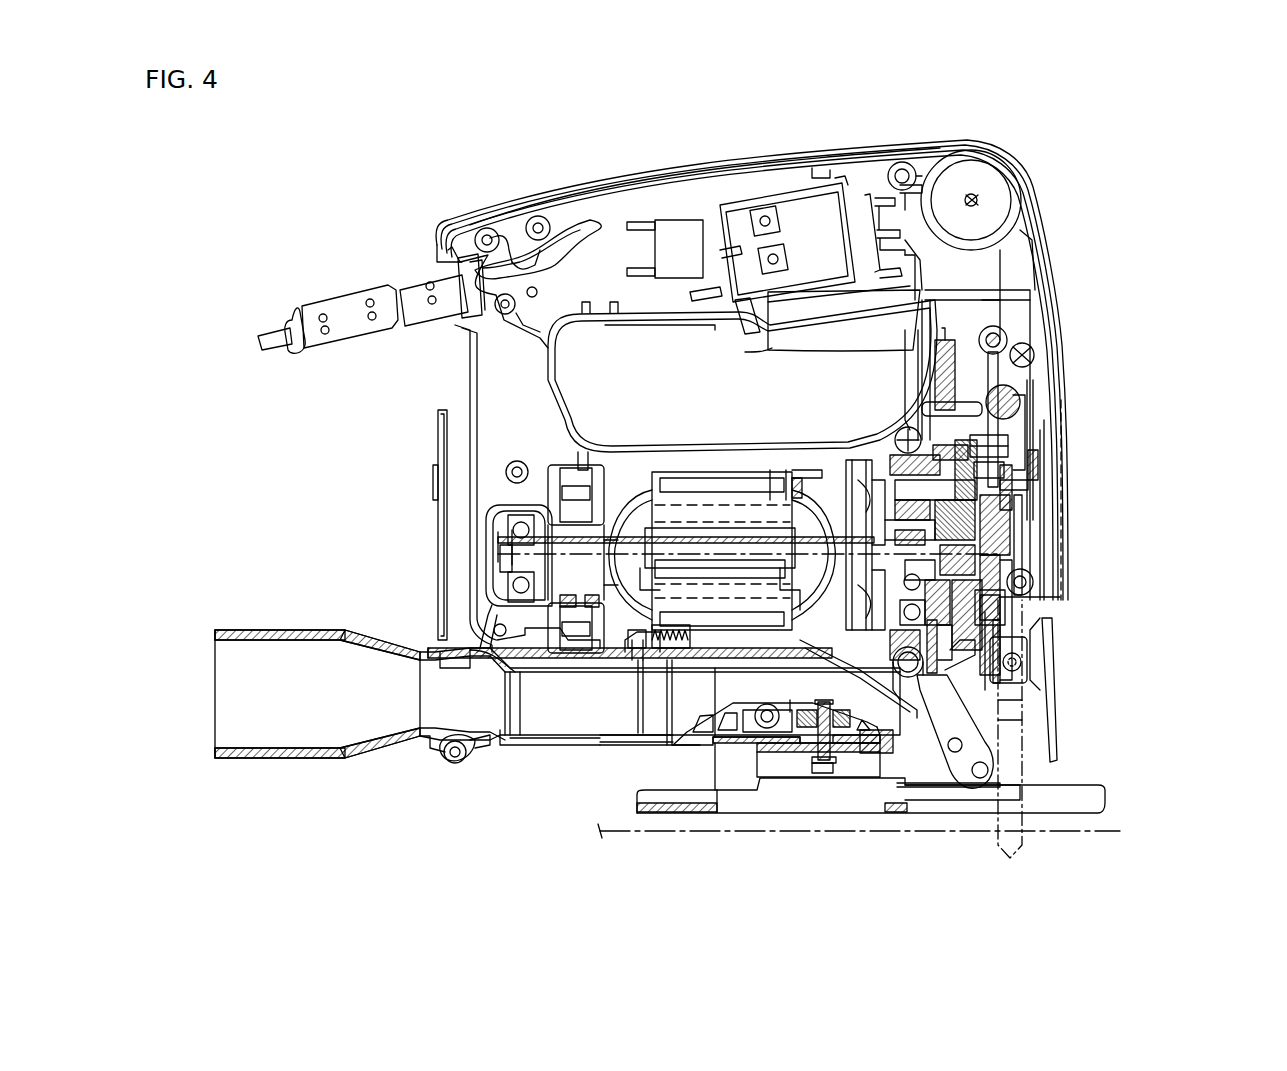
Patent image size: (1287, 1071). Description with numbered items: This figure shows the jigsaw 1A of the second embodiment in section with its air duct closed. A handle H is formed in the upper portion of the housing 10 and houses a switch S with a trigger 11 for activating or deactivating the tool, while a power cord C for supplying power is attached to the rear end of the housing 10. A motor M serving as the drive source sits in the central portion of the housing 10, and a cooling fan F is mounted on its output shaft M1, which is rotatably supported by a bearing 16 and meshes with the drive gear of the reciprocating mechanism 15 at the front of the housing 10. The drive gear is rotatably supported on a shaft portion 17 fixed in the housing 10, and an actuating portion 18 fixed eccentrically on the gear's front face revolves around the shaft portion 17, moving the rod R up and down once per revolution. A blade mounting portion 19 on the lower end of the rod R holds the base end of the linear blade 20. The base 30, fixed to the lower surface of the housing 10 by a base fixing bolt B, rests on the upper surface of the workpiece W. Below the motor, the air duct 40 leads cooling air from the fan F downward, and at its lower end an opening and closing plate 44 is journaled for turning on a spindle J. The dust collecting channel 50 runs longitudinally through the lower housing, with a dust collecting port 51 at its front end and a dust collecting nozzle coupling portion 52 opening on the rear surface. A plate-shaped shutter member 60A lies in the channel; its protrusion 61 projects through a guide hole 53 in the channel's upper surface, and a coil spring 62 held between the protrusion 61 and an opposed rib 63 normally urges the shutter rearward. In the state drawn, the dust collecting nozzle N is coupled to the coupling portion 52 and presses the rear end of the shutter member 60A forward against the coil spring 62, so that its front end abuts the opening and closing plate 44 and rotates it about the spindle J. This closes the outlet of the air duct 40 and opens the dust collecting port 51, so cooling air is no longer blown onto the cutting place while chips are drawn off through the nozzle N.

The jigsaw 1A is at (1038, 102).
The housing 10 is at (468, 366).
The trigger 11 is at (798, 354).
The reciprocating mechanism 15 is at (1030, 530).
The bearing 16 is at (960, 612).
The shaft portion 17 is at (1020, 448).
The actuating portion 18 is at (1020, 478).
The blade mounting portion 19 is at (1028, 664).
The blade 20 is at (1022, 775).
The base 30 is at (1105, 793).
The air duct 40 is at (965, 665).
The opening and closing plate 44 is at (900, 700).
The dust collecting channel 50 is at (555, 715).
The dust collecting port 51 is at (860, 700).
The dust collecting nozzle coupling portion 52 is at (487, 742).
The guide hole 53 is at (647, 660).
The shutter member 60A is at (505, 690).
The protrusion 61 is at (636, 720).
The coil spring 62 is at (670, 730).
The rib 63 is at (716, 660).
The base fixing bolt B is at (822, 770).
The power cord C is at (322, 296).
The cooling fan F is at (840, 432).
The handle H is at (722, 155).
The spindle J is at (800, 712).
The motor M is at (640, 505).
The output shaft M1 is at (950, 560).
The dust collecting nozzle N is at (288, 760).
The rod R is at (1040, 437).
The switch S is at (800, 225).
The workpiece W is at (1110, 836).